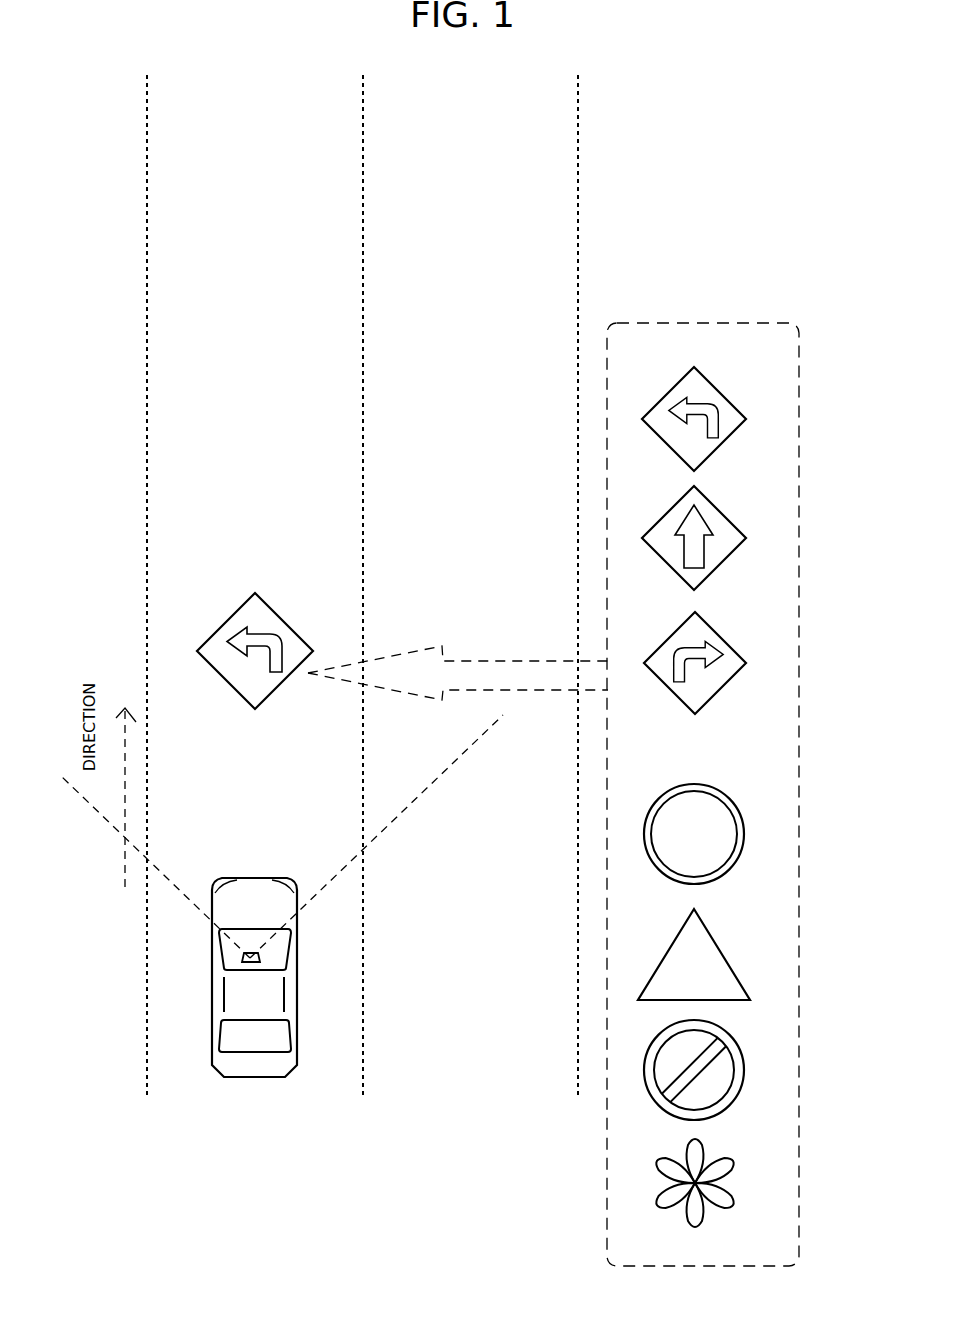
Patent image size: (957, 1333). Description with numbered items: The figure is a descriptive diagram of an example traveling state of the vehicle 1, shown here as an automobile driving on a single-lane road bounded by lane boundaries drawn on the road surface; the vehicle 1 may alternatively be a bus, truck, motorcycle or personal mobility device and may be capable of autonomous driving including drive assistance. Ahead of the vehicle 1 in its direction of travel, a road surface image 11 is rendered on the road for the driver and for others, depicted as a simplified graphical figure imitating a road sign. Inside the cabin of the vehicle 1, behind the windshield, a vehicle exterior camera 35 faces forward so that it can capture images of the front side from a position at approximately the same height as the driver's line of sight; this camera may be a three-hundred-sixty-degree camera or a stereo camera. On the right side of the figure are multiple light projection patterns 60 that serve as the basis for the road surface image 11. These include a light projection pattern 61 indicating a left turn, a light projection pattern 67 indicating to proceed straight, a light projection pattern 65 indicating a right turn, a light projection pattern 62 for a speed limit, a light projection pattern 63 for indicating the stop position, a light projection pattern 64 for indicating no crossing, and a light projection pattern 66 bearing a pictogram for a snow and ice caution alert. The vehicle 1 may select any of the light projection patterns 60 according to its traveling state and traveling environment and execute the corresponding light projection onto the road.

The vehicle 1 is at (222, 1010).
The road surface image 11 is at (212, 637).
The vehicle exterior camera 35 is at (263, 957).
The light projection patterns 60 is at (755, 323).
The light projection pattern indicating a left turn 61 is at (742, 424).
The light projection pattern for speed limit 62 is at (744, 836).
The light projection pattern for indicating the stop position 63 is at (733, 973).
The light projection pattern for indicating no crossing 64 is at (744, 1072).
The light projection pattern indicating a right turn 65 is at (740, 650).
The light projection pattern with a pictogram for snow and ice caution alert 66 is at (735, 1163).
The light projection pattern indicating to proceed straight 67 is at (740, 520).